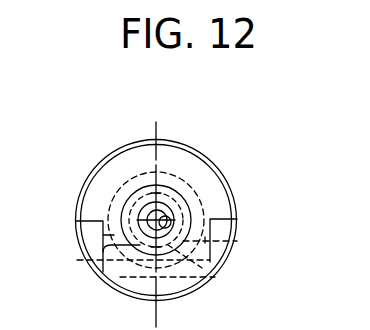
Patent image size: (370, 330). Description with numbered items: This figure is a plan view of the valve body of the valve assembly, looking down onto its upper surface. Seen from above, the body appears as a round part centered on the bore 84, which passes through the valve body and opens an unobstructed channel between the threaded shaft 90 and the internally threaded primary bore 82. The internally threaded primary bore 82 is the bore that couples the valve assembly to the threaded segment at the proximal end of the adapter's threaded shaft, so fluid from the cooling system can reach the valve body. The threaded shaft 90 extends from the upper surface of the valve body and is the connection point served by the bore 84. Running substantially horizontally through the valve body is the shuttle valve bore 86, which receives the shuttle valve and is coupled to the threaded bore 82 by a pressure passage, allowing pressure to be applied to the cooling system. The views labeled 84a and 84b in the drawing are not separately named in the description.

The internally threaded primary bore 82 is at (215, 277).
The bore 84 is at (168, 227).
The shaft pin 84a is at (176, 234).
The shaft collar 84b is at (143, 197).
The shuttle valve bore 86 is at (237, 242).
The threaded shaft 90 is at (103, 265).